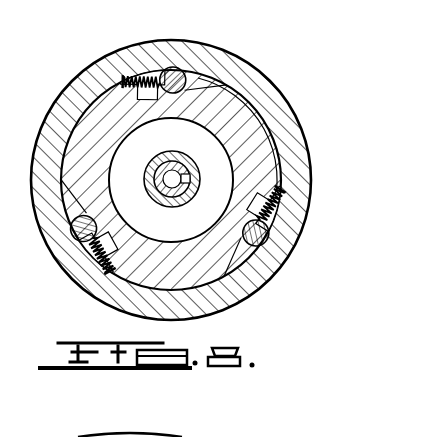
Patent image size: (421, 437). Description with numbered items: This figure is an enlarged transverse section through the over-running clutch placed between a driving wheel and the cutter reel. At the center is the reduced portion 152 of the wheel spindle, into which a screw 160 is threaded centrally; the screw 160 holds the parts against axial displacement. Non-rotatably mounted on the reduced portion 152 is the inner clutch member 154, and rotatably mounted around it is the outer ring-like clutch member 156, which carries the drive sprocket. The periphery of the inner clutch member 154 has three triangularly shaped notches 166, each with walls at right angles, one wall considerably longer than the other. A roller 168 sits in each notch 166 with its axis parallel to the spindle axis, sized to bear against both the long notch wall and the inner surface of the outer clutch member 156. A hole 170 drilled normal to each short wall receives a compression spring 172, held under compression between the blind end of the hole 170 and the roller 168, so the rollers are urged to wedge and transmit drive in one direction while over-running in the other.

The reduced portion of spindle 152 is at (175, 141).
The inner clutch member 154 is at (252, 117).
The outer ring-like clutch member 156 is at (257, 70).
The screw 160 is at (165, 206).
The triangularly shaped notch 166 is at (213, 90).
The roller 168 is at (184, 68).
The hole 170 is at (123, 77).
The compression spring 172 is at (151, 72).